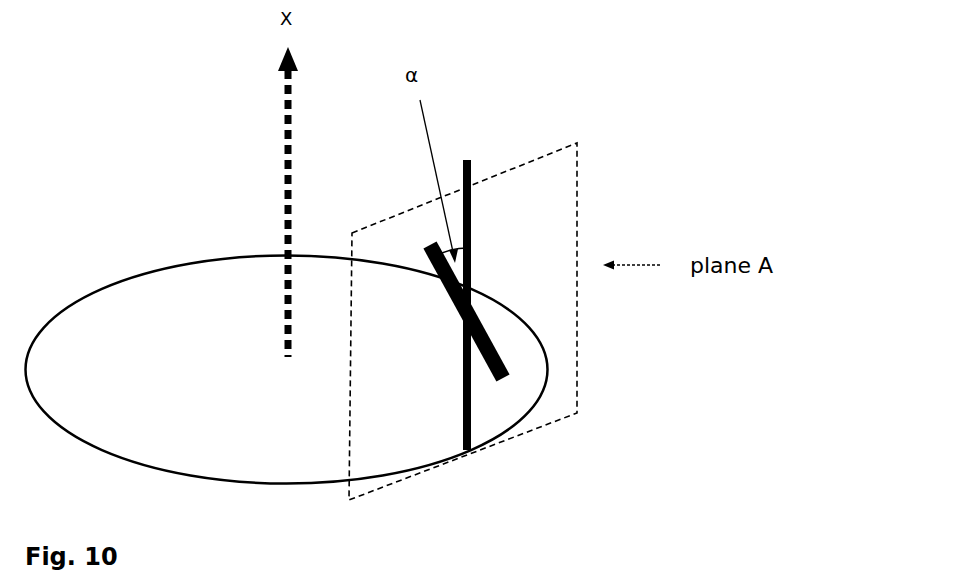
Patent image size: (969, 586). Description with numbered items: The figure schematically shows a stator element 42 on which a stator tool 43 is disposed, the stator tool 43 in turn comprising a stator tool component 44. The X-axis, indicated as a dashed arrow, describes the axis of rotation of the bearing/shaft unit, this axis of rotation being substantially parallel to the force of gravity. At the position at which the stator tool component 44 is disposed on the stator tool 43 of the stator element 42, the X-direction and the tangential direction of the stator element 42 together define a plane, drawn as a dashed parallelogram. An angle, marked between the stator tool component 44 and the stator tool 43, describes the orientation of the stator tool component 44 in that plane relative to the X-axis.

The stator element 42 is at (157, 268).
The stator tool 43 is at (470, 162).
The stator tool component 44 is at (512, 367).